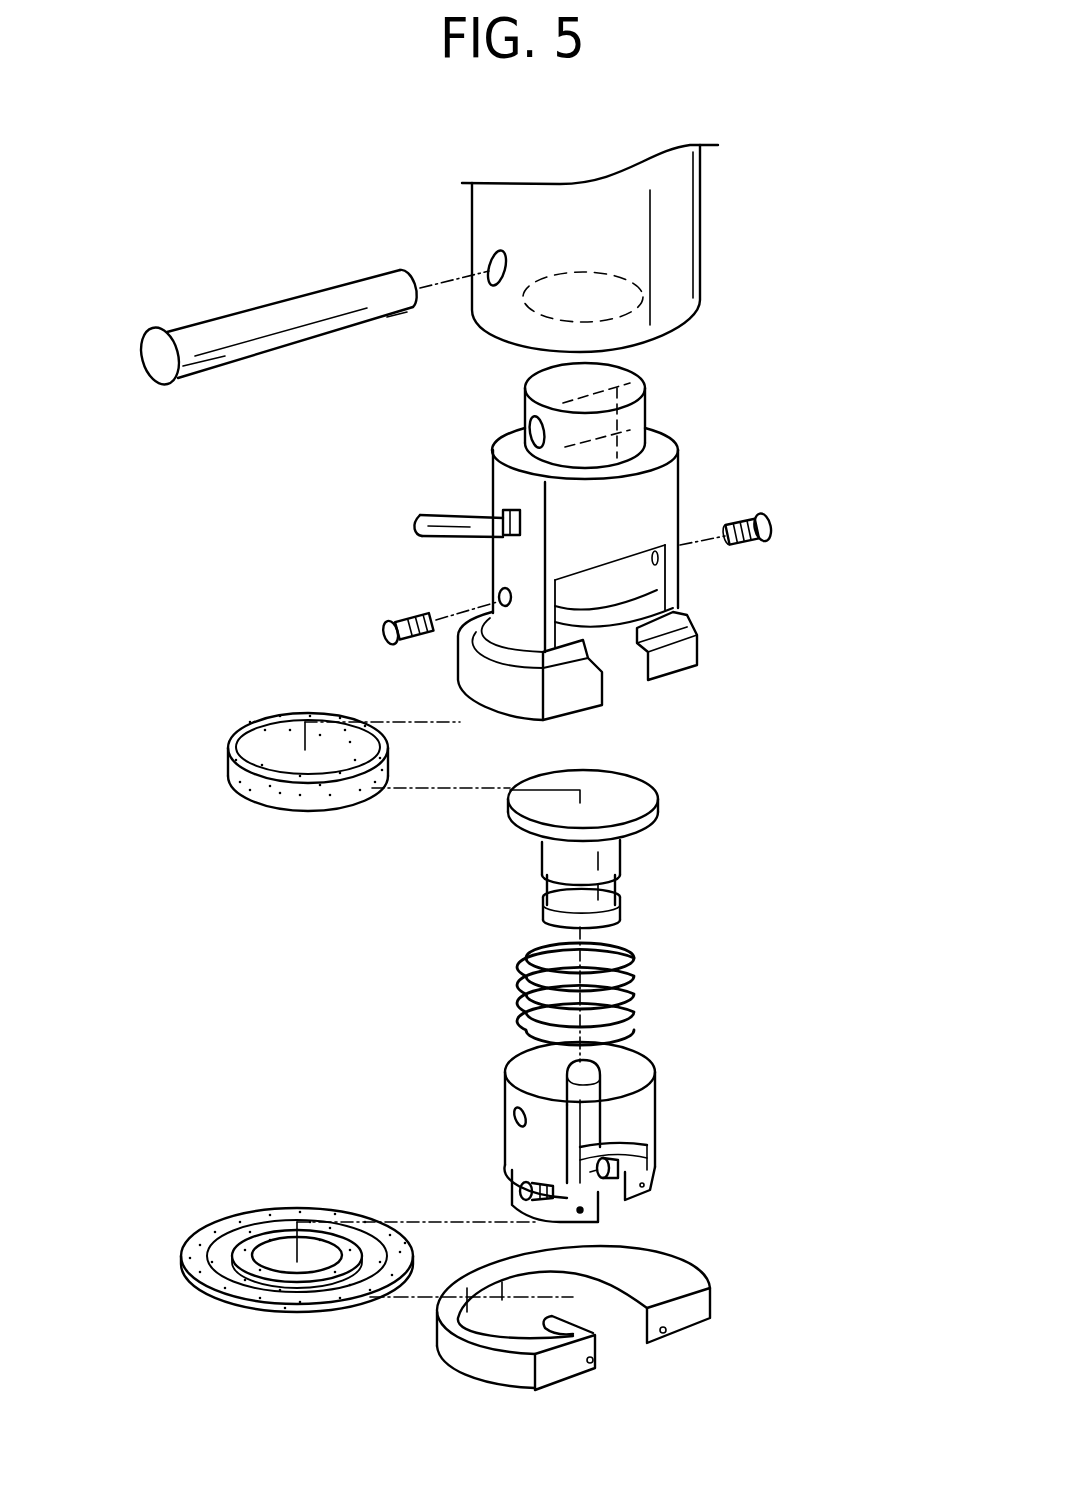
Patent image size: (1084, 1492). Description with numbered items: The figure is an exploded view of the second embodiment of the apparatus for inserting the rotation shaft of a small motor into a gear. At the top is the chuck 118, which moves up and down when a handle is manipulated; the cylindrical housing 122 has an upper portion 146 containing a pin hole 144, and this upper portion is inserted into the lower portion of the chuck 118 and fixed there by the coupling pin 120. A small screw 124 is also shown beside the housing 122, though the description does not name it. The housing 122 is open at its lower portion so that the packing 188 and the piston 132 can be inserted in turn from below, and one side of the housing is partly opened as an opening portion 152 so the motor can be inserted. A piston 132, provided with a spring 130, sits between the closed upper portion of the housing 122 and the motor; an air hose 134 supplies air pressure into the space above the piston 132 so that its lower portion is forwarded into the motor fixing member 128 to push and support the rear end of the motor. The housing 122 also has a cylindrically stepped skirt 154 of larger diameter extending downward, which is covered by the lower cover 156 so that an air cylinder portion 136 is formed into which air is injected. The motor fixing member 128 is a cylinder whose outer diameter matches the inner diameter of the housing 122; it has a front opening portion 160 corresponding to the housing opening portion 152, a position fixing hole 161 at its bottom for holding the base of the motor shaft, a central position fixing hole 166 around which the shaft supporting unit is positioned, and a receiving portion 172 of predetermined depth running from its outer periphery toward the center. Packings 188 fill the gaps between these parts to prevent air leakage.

The chuck 118 is at (690, 230).
The coupling pin 120 is at (287, 317).
The cylindrical housing 122 is at (683, 457).
The set screw 124 is at (768, 517).
The motor fixing member 128 is at (660, 1093).
The spring 130 is at (633, 997).
The piston 132 is at (648, 790).
The air hose 134 is at (483, 513).
The air cylinder portion 136 is at (640, 1278).
The pin hole 144 is at (525, 425).
The upper portion 146 is at (545, 382).
The opening portion 152 is at (650, 585).
The cylindrically stepped skirt 154 is at (477, 645).
The lower cover 156 is at (700, 1290).
The opening portion 160 is at (630, 1125).
The position fixing hole 161 is at (600, 1085).
The position fixing hole 166 is at (622, 1172).
The receiving portion 172 is at (505, 1178).
The packing 188 is at (270, 716).